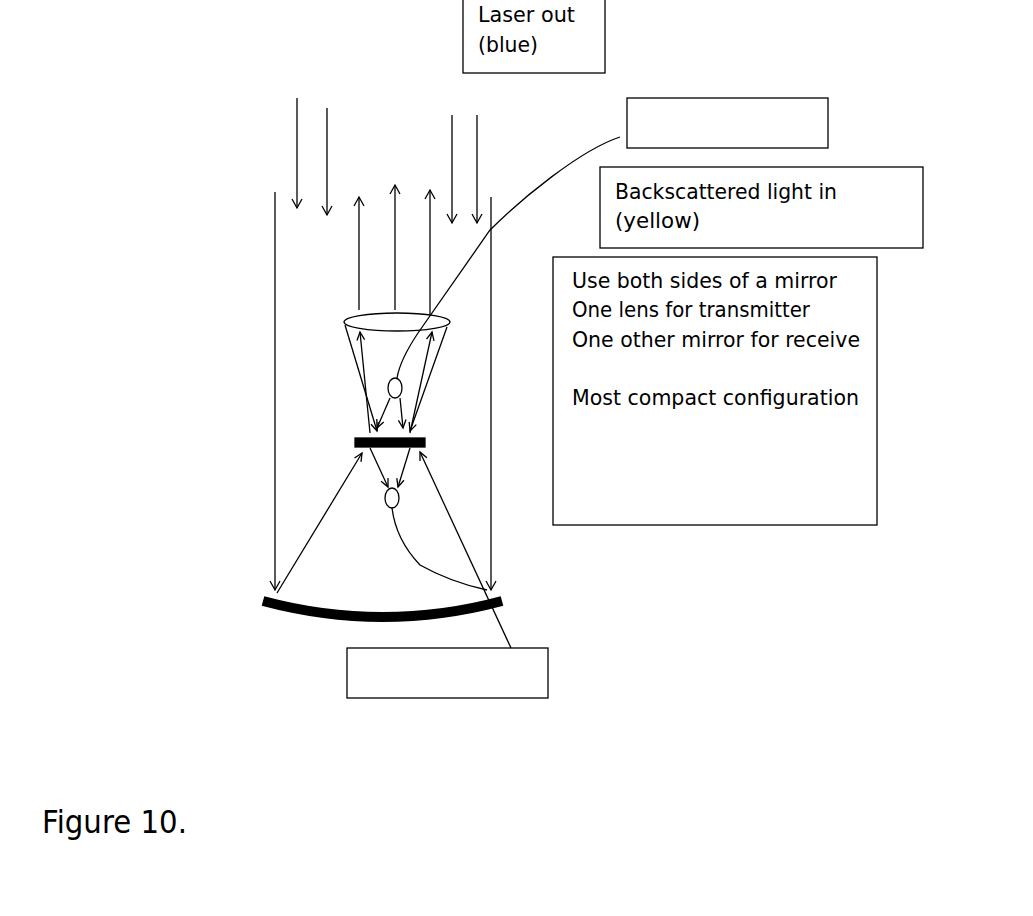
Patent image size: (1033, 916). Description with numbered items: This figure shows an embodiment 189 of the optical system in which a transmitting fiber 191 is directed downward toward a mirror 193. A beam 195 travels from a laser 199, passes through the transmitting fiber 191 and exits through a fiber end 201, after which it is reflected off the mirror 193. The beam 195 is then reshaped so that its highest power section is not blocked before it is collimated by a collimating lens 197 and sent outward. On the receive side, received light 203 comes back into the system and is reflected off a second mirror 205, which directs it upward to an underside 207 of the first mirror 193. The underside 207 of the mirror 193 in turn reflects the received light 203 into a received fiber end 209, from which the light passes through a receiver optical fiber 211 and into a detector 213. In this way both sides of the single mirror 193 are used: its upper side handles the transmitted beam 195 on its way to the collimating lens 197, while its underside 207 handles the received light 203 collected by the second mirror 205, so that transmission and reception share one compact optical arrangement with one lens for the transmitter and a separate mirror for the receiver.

The embodiment 189 is at (157, 335).
The transmitting fiber 191 is at (557, 177).
The mirror 193 is at (357, 442).
The beam 195 is at (398, 213).
The collimating lens 197 is at (347, 319).
The laser 199 is at (717, 98).
The fiber end 201 is at (403, 388).
The received light 203 is at (273, 243).
The second mirror 205 is at (287, 613).
The underside 207 is at (412, 452).
The received fiber end 209 is at (400, 504).
The receiver optical fiber 211 is at (503, 626).
The detector 213 is at (548, 682).